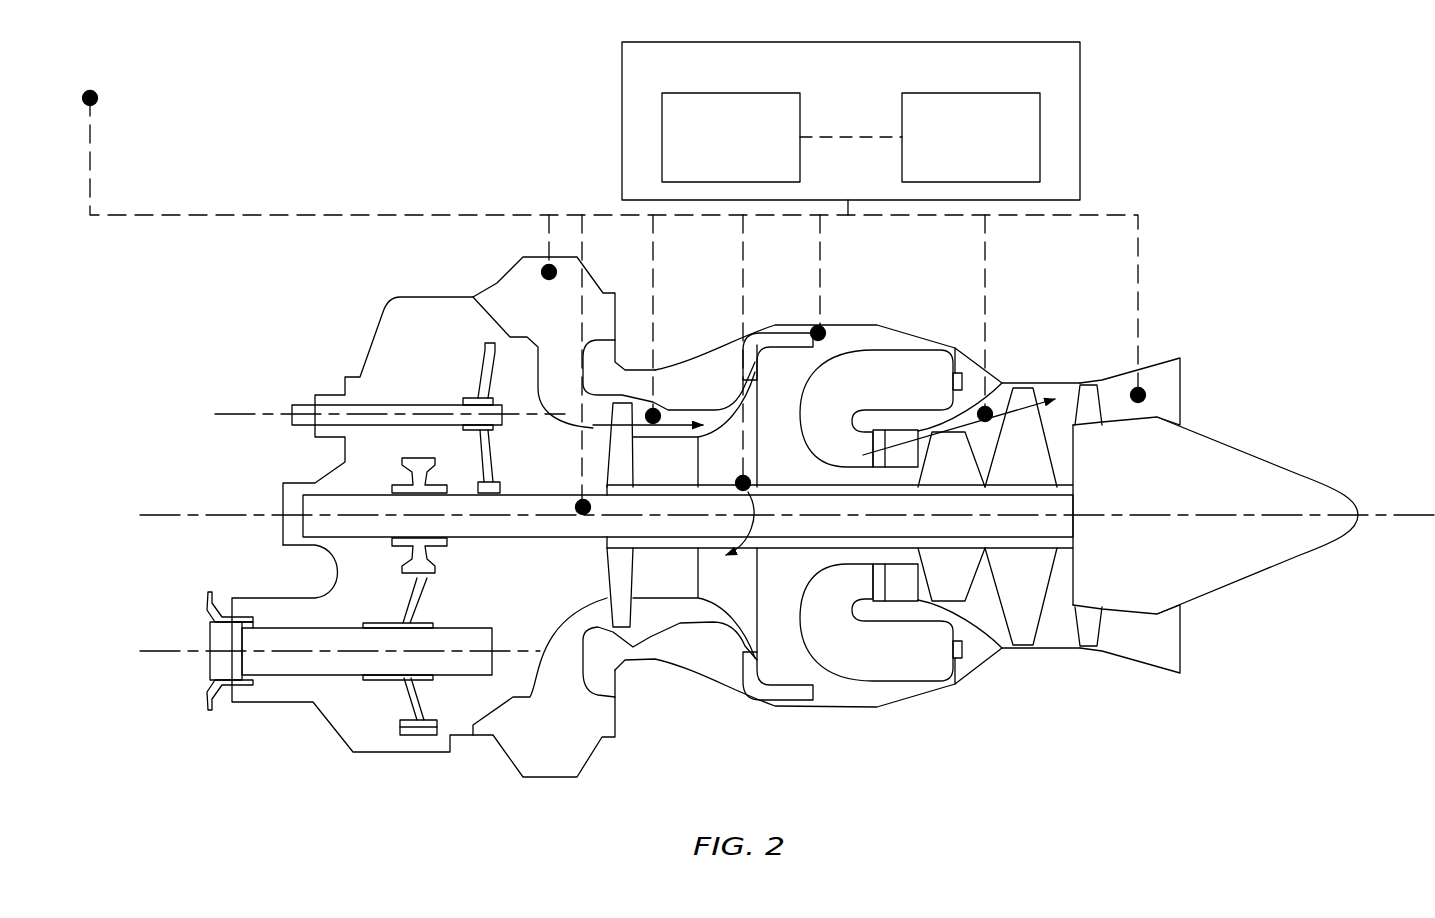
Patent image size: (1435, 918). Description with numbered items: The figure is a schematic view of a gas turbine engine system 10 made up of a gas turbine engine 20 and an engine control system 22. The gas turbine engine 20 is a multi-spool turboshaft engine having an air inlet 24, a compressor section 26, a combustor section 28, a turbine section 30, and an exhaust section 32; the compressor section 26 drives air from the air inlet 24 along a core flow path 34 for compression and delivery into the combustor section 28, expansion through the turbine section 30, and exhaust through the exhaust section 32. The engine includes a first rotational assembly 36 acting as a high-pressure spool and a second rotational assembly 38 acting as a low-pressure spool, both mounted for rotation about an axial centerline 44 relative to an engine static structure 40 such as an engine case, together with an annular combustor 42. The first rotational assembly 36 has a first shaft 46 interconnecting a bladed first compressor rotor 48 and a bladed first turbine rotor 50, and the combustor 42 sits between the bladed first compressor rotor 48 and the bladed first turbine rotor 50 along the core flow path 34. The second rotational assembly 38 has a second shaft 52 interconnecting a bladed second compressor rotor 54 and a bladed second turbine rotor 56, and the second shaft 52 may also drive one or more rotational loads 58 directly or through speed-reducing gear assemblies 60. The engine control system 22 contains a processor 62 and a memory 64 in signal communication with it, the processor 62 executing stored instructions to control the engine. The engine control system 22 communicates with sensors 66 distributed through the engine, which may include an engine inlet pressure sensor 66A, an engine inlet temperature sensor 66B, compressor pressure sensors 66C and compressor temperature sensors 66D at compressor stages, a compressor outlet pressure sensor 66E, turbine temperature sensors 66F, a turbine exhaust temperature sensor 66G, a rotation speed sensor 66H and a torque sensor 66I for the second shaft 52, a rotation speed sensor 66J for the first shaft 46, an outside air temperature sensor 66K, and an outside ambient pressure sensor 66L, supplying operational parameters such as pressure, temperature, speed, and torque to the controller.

The gas turbine engine system 10 is at (1358, 151).
The gas turbine engine 20 is at (1243, 352).
The engine control system 22 is at (911, 117).
The air inlet 24 is at (522, 283).
The compressor section 26 is at (691, 301).
The combustor section 28 is at (901, 461).
The turbine section 30 is at (1048, 500).
The exhaust section 32 is at (1194, 345).
The core flow path 34 is at (685, 409).
The first rotational assembly 36 is at (778, 471).
The second rotational assembly 38 is at (517, 553).
The engine static structure 40 is at (870, 325).
The annular combustor 42 is at (867, 367).
The axial centerline 44 is at (1433, 523).
The first shaft 46 is at (765, 540).
The bladed first compressor rotor 48 is at (730, 585).
The bladed first turbine rotor 50 is at (957, 592).
The second shaft 52 is at (577, 518).
The bladed second compressor rotor 54 is at (623, 615).
The bladed second turbine rotor 56 is at (1033, 627).
The rotational load 58 is at (393, 412).
The speed-reducing gear assembly 60 is at (498, 480).
The processor 62 is at (717, 167).
The memory 64 is at (957, 167).
The sensors 66 is at (567, 198).
The engine inlet pressure sensor 66A is at (490, 223).
The engine inlet temperature sensor 66B is at (548, 270).
The compressor pressure sensor 66C is at (631, 324).
The compressor temperature sensor 66D is at (653, 410).
The compressor outlet pressure sensor 66E is at (817, 330).
The turbine temperature sensor 66F is at (987, 410).
The turbine exhaust temperature sensor 66G is at (1142, 392).
The rotation speed sensor for second shaft 66H is at (561, 616).
The torque sensor 66I is at (583, 514).
The rotation speed sensor for first shaft 66J is at (743, 483).
The outside air temperature sensor 66K is at (160, 98).
The outside ambient pressure sensor 66L is at (97, 97).